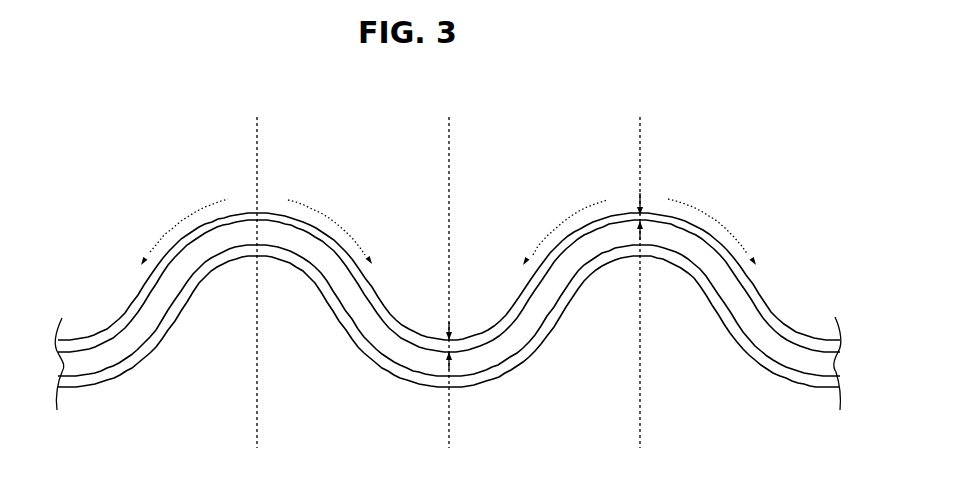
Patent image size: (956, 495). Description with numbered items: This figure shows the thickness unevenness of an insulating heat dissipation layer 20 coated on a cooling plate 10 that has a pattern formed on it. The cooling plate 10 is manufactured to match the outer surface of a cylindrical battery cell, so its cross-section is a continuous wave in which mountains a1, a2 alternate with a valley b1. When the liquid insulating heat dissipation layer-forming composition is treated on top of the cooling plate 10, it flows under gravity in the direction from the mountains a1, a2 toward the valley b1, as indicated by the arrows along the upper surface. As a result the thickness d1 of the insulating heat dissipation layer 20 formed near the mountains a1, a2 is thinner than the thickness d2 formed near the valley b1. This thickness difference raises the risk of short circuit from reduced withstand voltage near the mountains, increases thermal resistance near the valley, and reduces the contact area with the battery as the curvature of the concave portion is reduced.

The cooling plate 10 is at (780, 351).
The insulating heat dissipation layer 20 is at (772, 318).
The mountain a1 is at (254, 268).
The valley b1 is at (446, 268).
The mountain a2 is at (637, 268).
The thickness near the mountains d1 is at (650, 212).
The thickness near the valleys d2 is at (455, 352).